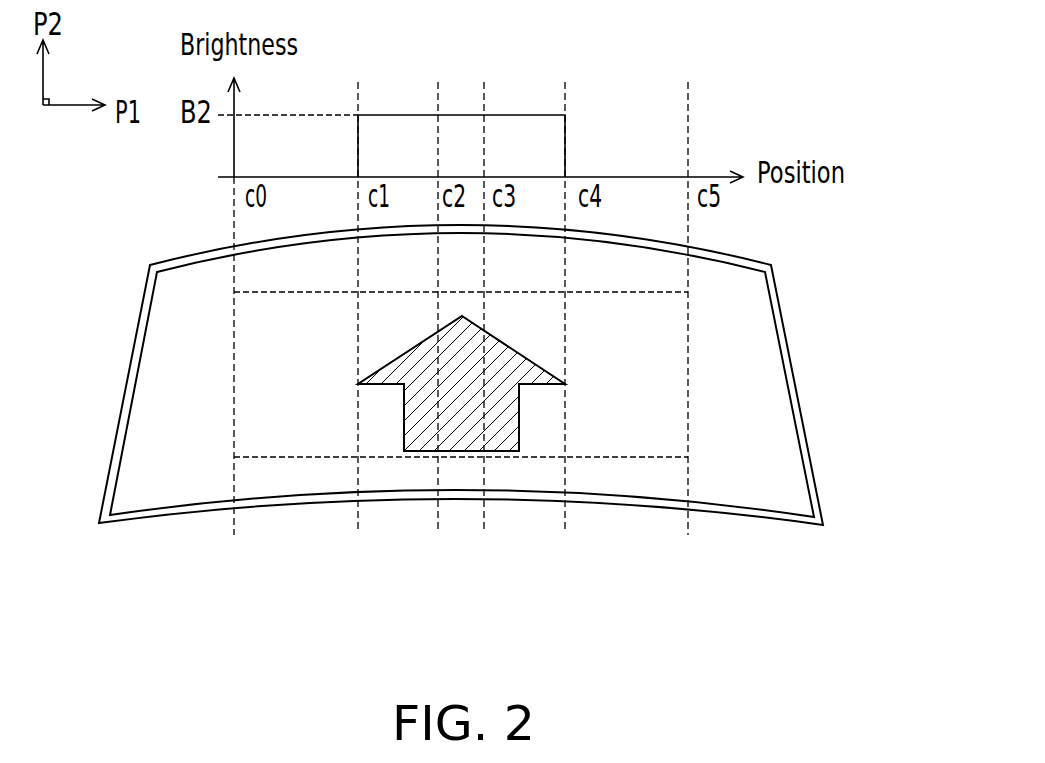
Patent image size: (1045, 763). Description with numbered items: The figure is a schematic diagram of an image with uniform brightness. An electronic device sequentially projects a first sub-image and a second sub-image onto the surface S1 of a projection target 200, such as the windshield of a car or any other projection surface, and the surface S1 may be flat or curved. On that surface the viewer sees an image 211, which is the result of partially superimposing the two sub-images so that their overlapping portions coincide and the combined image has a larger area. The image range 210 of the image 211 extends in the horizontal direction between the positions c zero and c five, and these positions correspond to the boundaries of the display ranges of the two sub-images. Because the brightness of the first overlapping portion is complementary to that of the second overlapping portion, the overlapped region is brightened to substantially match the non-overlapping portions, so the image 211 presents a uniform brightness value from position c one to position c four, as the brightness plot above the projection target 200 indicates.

The projection target 200 is at (747, 252).
The surface S1 is at (754, 315).
The image range 210 is at (688, 385).
The image 211 is at (390, 323).